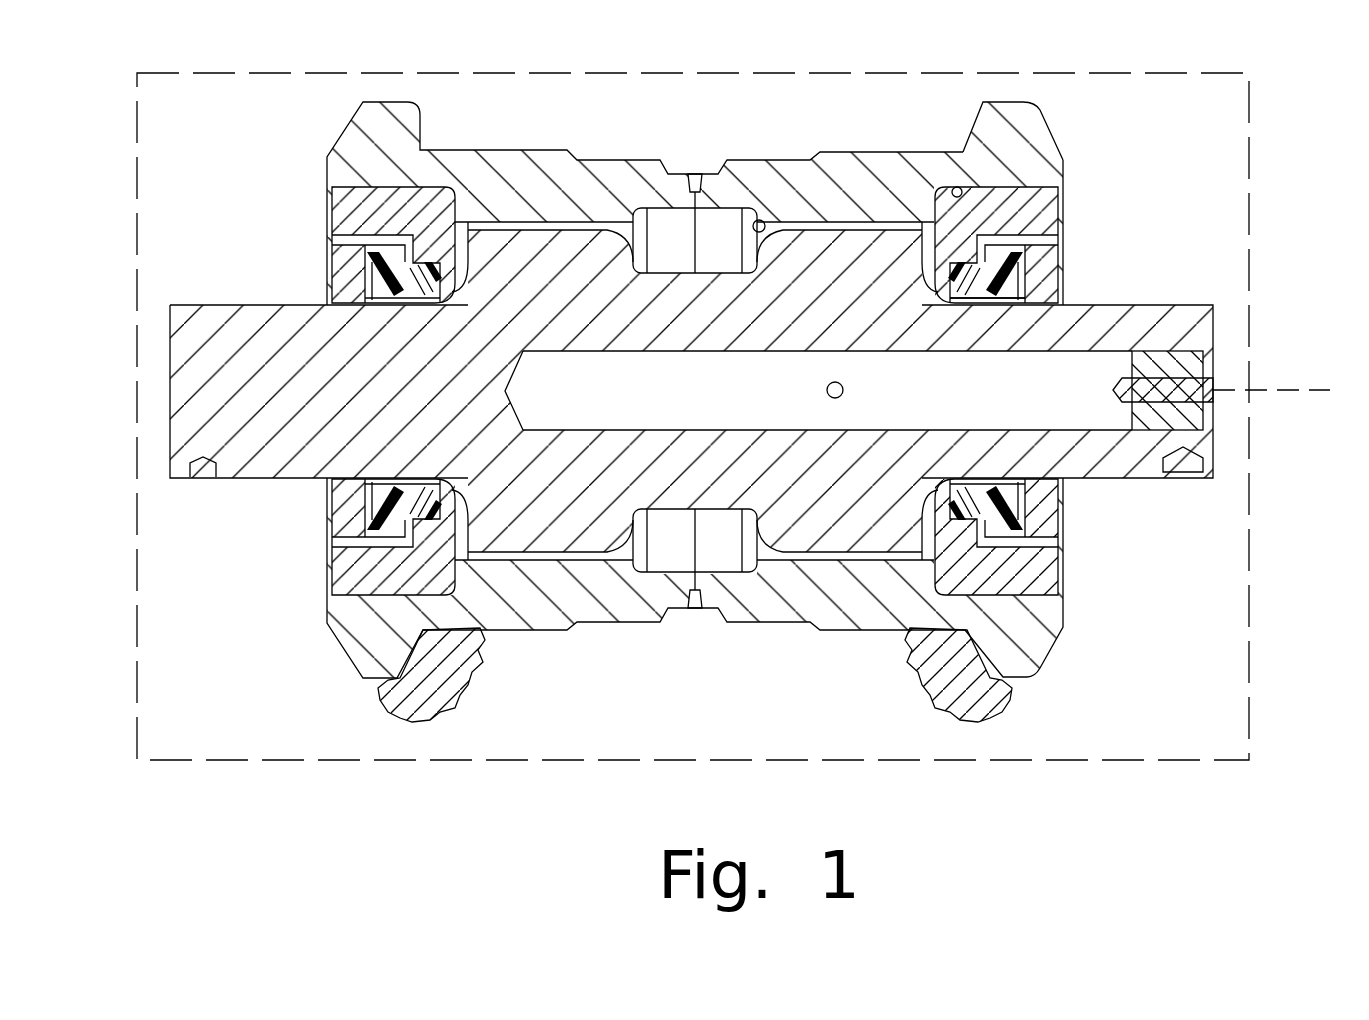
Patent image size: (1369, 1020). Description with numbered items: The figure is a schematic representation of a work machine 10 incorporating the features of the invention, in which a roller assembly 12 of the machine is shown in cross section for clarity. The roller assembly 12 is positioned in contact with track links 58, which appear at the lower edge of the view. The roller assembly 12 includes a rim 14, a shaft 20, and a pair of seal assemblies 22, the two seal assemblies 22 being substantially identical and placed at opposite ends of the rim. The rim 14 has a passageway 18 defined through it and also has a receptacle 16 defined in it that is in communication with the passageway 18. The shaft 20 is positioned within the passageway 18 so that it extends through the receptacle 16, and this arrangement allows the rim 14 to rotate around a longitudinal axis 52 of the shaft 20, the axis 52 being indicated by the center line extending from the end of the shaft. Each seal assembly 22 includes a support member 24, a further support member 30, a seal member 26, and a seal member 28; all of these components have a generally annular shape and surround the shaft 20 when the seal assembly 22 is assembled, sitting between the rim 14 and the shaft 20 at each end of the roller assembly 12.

The work machine 10 is at (1279, 146).
The roller assembly 12 is at (1098, 172).
The rim 14 is at (1032, 124).
The receptacle 16 is at (955, 187).
The passageway 18 is at (760, 220).
The shaft 20 is at (1190, 310).
The seal assembly 22 is at (699, 375).
The support member 24 is at (1063, 291).
The seal member 26 is at (1063, 268).
The seal member 28 is at (960, 303).
The support member 30 is at (1051, 200).
The longitudinal axis 52 is at (1290, 389).
The track links 58 is at (482, 658).